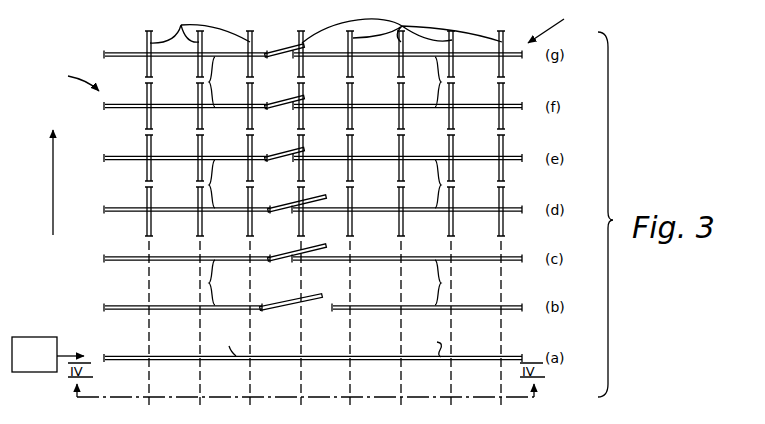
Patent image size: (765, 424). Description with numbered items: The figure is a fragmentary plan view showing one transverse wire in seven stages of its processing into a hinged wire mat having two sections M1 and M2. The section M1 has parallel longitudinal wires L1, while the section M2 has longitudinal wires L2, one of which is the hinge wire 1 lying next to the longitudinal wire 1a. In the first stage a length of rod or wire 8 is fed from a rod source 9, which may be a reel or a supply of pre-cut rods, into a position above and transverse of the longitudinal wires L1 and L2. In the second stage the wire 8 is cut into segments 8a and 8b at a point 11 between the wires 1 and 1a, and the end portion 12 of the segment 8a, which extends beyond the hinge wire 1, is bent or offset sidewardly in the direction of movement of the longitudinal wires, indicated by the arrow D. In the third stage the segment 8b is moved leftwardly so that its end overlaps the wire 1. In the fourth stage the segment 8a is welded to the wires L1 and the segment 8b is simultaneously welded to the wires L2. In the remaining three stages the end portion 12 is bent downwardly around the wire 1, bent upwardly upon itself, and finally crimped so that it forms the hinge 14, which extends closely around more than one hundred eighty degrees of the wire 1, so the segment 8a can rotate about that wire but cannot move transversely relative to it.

The hinge wire 1 is at (303, 41).
The longitudinal wire 1a is at (351, 100).
The rod or wire 8 is at (115, 304).
The wire segment 8a is at (222, 206).
The wire segment 8b is at (428, 207).
The rod source 9 is at (42, 373).
The cutting point 11 is at (333, 305).
The end portion 12 is at (322, 197).
The hinge 14 is at (303, 45).
The longitudinal wires L1 is at (200, 26).
The longitudinal wires L2 is at (402, 26).
The mat section M1 is at (71, 82).
The mat section M2 is at (557, 27).
The direction of movement D is at (43, 182).